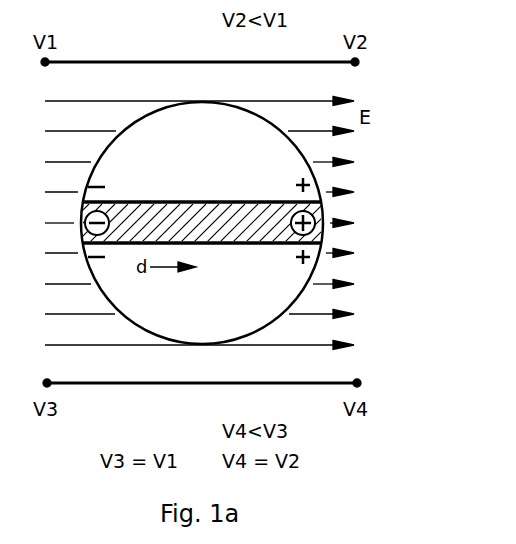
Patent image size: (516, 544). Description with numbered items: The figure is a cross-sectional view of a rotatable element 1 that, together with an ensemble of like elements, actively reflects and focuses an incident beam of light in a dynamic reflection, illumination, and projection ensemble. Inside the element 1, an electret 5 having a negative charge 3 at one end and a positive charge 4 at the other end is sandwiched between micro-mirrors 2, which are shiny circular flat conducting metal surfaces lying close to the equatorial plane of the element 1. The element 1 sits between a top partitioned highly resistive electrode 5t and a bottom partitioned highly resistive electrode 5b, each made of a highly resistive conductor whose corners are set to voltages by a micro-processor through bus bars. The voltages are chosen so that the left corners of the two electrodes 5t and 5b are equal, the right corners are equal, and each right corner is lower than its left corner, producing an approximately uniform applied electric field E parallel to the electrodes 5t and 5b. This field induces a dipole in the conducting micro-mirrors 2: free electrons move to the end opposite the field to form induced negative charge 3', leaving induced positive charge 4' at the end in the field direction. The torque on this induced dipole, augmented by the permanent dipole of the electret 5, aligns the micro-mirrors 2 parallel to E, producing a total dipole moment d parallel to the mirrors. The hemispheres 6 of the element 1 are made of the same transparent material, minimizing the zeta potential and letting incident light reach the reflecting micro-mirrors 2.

The rotatable element 1 is at (203, 210).
The micro-mirrors 2 is at (248, 201).
The negative charge 3 is at (75, 225).
The positive charge 4 is at (328, 216).
The induced negative charge 3' is at (120, 230).
The induced positive charge 4' is at (281, 231).
The electret dipole 5 is at (156, 201).
The top partitioned highly resistive electrode 5t is at (163, 62).
The bottom partitioned highly resistive electrode 5b is at (168, 383).
The hemispheres 6 is at (205, 113).